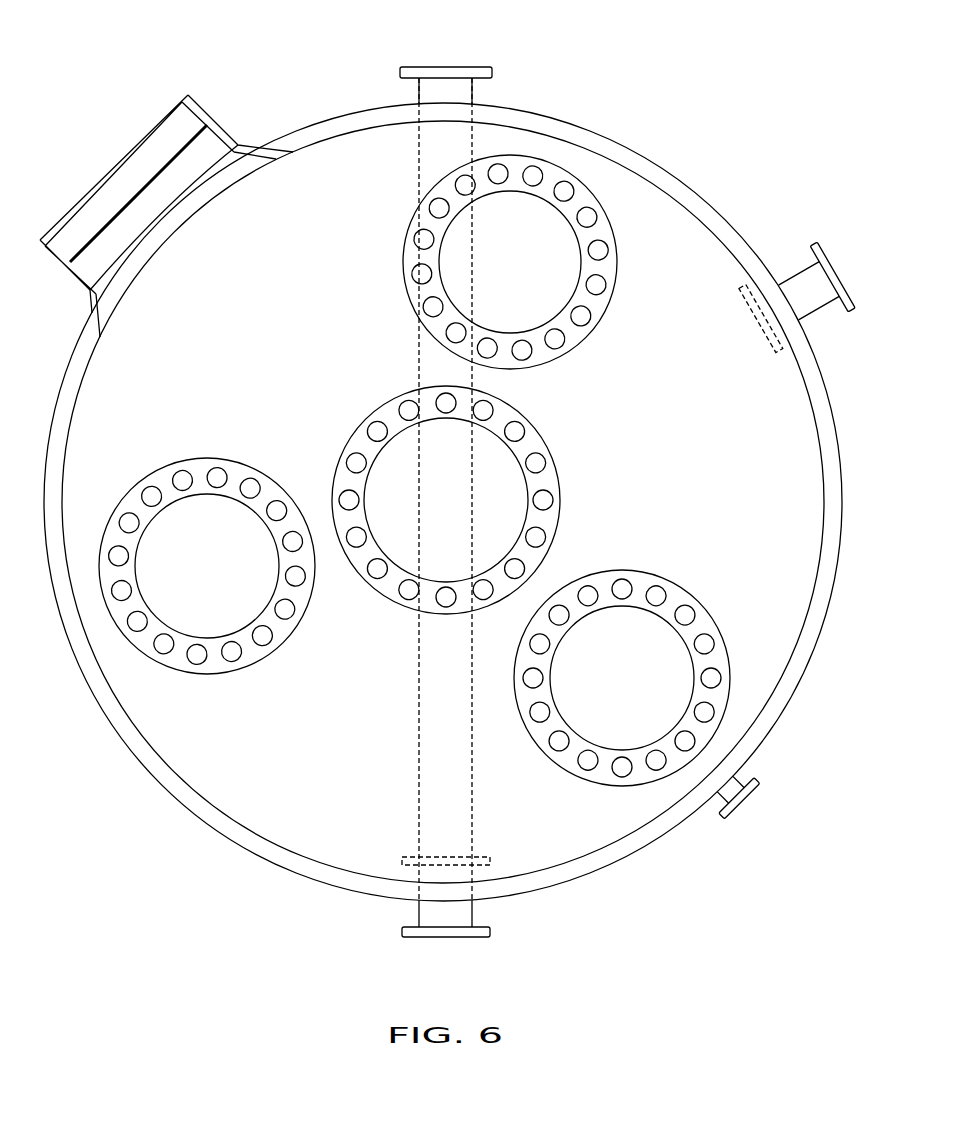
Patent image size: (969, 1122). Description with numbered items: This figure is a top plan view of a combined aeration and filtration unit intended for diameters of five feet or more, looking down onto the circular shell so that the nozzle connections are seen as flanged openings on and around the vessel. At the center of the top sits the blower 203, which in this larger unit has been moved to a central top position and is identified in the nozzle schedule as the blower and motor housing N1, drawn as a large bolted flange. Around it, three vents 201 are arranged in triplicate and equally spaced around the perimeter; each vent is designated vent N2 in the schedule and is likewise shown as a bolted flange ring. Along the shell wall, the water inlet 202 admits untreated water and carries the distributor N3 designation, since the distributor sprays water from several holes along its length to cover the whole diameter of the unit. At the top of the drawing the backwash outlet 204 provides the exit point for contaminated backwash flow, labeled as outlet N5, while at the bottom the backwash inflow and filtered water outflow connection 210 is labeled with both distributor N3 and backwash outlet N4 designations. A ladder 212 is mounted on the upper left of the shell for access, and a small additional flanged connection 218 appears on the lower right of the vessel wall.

The vents 201 is at (619, 265).
The water inlet 202 is at (846, 272).
The blower 203 is at (563, 503).
The backwash outlet 204 is at (457, 66).
The filtered water outflow 210 is at (432, 940).
The ladder 212 is at (113, 168).
The small nozzle 218 is at (747, 800).
The blower and motor housing N1 is at (483, 500).
The vent N2 is at (414, 502).
The distributor N3 is at (654, 575).
The backwash outlet N4 is at (484, 927).
The outlet N5 is at (422, 58).